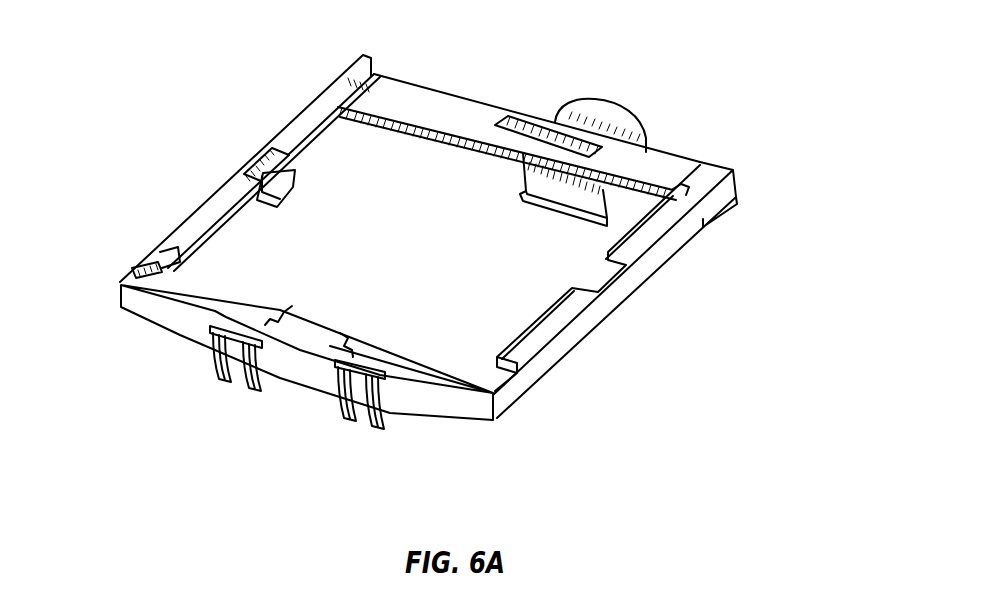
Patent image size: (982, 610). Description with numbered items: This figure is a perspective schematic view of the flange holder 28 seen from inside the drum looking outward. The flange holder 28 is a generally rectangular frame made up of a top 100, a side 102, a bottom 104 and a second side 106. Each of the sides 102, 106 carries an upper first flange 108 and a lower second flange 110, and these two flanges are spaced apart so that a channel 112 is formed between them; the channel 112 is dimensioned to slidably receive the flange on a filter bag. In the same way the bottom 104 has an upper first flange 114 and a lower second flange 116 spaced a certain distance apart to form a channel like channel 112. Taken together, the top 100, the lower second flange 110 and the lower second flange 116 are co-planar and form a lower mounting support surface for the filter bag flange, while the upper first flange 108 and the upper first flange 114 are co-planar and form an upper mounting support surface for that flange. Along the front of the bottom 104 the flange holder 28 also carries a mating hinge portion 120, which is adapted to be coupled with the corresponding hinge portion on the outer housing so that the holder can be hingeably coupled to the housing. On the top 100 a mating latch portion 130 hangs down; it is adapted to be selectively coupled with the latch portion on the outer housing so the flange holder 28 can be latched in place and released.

The flange holder 28 is at (463, 265).
The top 100 is at (423, 265).
The side 102 is at (626, 289).
The bottom 104 is at (458, 400).
The second side 106 is at (180, 227).
The upper first flange 108 is at (375, 72).
The lower second flange 110 is at (290, 190).
The channel 112 is at (690, 188).
The upper first flange 114 is at (318, 334).
The lower second flange 116 is at (246, 300).
The mating hinge portion 120 is at (362, 430).
The mating latch portion 130 is at (522, 176).